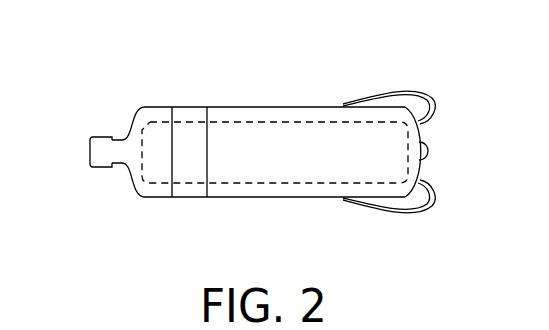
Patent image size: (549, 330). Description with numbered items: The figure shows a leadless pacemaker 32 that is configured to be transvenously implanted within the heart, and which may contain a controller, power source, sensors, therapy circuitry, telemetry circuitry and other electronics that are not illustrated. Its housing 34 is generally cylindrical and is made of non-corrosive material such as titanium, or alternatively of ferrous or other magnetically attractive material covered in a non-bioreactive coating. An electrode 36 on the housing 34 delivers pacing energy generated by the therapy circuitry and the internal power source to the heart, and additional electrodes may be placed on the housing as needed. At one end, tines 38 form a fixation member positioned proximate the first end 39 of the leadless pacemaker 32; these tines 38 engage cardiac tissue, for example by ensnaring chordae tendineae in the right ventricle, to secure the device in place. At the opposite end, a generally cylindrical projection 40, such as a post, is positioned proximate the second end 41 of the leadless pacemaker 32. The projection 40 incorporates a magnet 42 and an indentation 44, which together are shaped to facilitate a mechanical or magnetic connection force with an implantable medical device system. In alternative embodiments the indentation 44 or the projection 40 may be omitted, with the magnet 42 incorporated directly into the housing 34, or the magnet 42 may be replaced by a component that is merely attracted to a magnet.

The leadless pacemaker 32 is at (256, 70).
The housing 34 is at (221, 199).
The electrode 36 is at (431, 152).
The tines 38 is at (403, 93).
The first end 39 is at (364, 167).
The projection 40 is at (112, 138).
The second end 41 is at (158, 138).
The magnet 42 is at (90, 154).
The indentation 44 is at (122, 163).